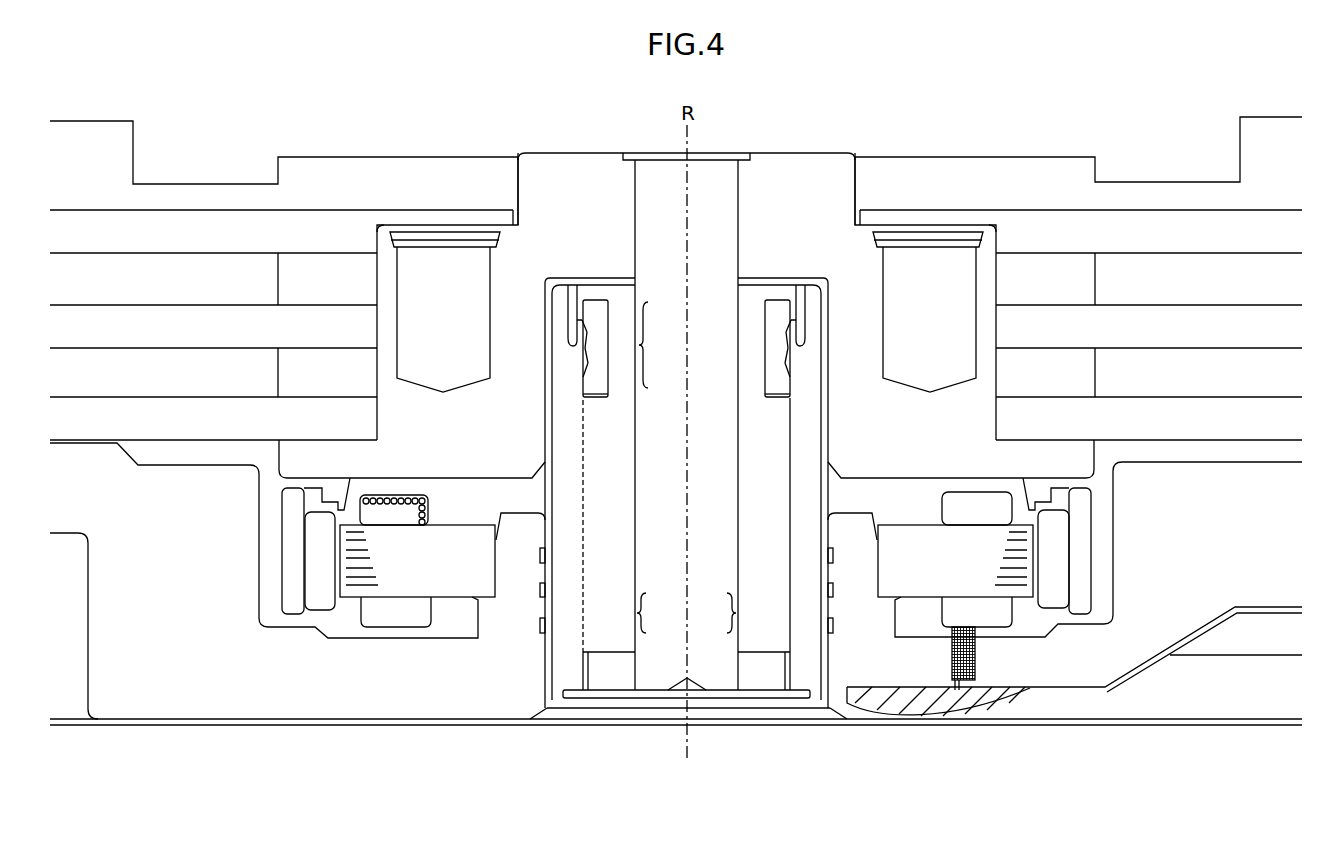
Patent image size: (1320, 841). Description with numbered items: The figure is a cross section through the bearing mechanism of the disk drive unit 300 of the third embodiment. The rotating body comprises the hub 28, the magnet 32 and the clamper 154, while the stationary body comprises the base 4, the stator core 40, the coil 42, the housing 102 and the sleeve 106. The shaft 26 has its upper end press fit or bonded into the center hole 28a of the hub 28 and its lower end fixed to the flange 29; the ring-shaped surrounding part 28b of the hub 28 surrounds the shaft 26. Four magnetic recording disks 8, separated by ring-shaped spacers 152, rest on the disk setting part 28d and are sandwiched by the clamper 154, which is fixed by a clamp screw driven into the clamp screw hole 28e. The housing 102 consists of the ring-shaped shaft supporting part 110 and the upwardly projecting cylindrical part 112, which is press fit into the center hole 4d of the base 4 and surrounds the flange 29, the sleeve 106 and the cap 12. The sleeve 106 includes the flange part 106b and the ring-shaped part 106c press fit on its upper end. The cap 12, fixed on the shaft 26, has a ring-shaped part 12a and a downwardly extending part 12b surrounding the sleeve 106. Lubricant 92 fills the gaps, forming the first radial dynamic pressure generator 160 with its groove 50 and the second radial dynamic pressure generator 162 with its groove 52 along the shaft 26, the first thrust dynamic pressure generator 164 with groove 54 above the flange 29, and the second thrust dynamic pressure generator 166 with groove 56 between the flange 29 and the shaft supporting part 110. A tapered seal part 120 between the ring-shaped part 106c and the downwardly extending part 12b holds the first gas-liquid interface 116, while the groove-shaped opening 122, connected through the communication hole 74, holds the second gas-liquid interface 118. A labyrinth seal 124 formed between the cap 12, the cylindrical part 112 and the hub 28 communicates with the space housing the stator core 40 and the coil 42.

The disk drive unit 300 is at (78, 72).
The base 4 is at (80, 712).
The center hole 4d is at (545, 612).
The magnetic recording disk 8 is at (117, 218).
The cap 12 is at (630, 238).
The ring-shaped part 12a is at (617, 290).
The downwardly extending part 12b is at (577, 300).
The shaft 26 is at (653, 170).
The hub 28 is at (584, 145).
The center hole 28a is at (742, 200).
The ring-shaped surrounding part 28b is at (537, 168).
The disk setting part 28d is at (276, 602).
The clamp screw hole 28e is at (447, 260).
The flange 29 is at (750, 681).
The magnet 32 is at (320, 602).
The stator core 40 is at (455, 572).
The coil 42 is at (385, 620).
The first radial dynamic pressure generating groove 50 is at (738, 355).
The second radial dynamic pressure generating groove 52 is at (738, 623).
The first thrust dynamic pressure generating groove 54 is at (628, 654).
The second thrust dynamic pressure generating groove 56 is at (612, 699).
The communication hole 74 is at (586, 512).
The lubricant 92 is at (577, 316).
The housing 102 is at (830, 788).
The sleeve 106 is at (808, 458).
The flange part 106b is at (587, 438).
The ring-shaped part 106c is at (592, 390).
The shaft supporting part 110 is at (765, 699).
The cylindrical part 112 is at (813, 668).
The first gas-liquid interface 116 is at (582, 325).
The second gas-liquid interface 118 is at (583, 378).
The seal part 120 is at (570, 342).
The groove-shaped opening 122 is at (580, 362).
The labyrinth seal 124 is at (567, 313).
The spacer 152 is at (278, 282).
The clamper 154 is at (340, 162).
The first radial dynamic pressure generator 160 is at (758, 414).
The second radial dynamic pressure generator 162 is at (713, 613).
The first thrust dynamic pressure generator 164 is at (588, 648).
The second thrust dynamic pressure generator 166 is at (588, 684).